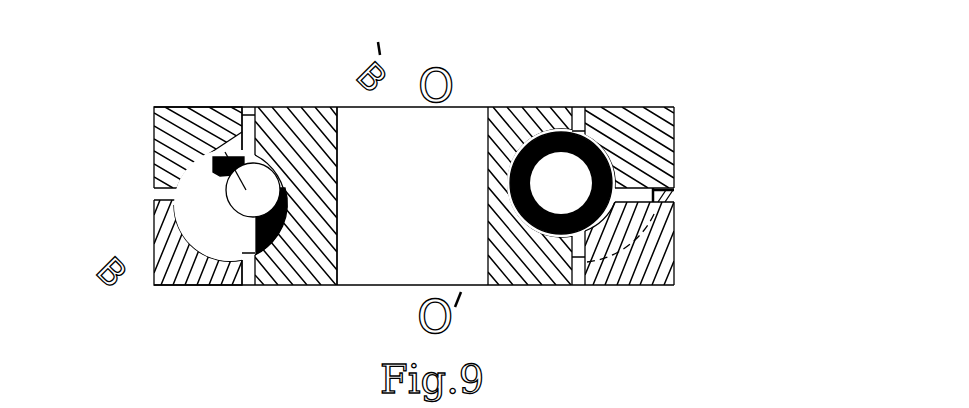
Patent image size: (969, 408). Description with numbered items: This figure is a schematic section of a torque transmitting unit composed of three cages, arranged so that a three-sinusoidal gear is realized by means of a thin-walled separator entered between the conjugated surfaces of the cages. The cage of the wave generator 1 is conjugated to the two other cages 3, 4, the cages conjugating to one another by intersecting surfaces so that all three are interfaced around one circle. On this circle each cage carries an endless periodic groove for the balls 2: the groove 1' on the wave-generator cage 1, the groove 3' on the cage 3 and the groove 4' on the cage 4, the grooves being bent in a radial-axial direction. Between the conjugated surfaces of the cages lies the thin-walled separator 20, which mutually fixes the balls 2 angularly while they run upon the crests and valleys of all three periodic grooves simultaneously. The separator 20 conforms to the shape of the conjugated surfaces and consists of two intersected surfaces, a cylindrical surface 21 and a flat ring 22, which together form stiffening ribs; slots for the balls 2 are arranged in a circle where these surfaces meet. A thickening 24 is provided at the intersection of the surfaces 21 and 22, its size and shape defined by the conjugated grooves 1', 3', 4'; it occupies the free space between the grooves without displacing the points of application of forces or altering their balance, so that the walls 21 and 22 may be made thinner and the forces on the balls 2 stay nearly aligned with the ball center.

The cage of the wave generator 1 is at (283, 142).
The periodic groove of cage 1 1' is at (532, 142).
The rolling bodies (balls) 2 is at (596, 140).
The cage of transmitting unit 3 is at (657, 136).
The periodic groove of cage 3 3' is at (247, 142).
The cage of transmitting unit 4 is at (662, 207).
The periodic groove of cage 4 4' is at (206, 258).
The thin-walled separator 20 is at (157, 195).
The cylindrical surface 21 is at (576, 285).
The flat ring 22 is at (670, 197).
The thickening 24 is at (155, 107).